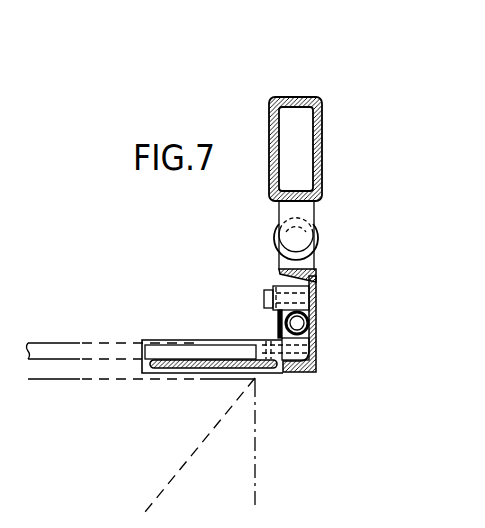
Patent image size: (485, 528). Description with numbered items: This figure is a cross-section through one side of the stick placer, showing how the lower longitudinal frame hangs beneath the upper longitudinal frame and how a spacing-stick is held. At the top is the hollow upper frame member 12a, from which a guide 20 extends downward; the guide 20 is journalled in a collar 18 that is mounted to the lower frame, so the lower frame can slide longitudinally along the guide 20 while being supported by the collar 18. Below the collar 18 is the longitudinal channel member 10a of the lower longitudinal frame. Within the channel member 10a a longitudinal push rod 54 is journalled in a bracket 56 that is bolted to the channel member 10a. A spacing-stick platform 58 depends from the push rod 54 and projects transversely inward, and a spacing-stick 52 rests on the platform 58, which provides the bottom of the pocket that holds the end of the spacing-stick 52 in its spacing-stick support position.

The longitudinal channel member of upper longitudinal frame 12a is at (319, 150).
The guide 20 is at (302, 234).
The collar 18 is at (317, 242).
The longitudinal channel member 10a is at (318, 278).
The bracket 56 is at (285, 293).
The longitudinal push rod 54 is at (319, 313).
The spacing-stick platform 58 is at (189, 352).
The spacing-stick 52 is at (88, 350).